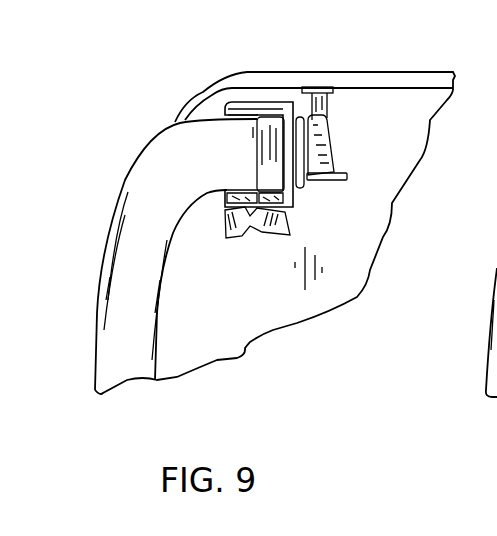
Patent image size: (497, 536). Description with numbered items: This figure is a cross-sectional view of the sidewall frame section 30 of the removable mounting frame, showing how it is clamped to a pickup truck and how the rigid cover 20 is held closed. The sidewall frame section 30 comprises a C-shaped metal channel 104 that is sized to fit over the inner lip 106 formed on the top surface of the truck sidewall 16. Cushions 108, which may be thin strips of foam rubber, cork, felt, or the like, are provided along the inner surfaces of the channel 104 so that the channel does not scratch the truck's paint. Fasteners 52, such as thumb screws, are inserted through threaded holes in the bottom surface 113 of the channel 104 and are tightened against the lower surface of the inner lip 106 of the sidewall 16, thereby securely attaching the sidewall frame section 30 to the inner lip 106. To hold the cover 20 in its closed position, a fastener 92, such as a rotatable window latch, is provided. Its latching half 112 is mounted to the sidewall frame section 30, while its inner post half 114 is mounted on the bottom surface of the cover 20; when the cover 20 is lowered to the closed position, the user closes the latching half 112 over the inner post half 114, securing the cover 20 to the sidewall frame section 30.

The sidewall 16 is at (145, 193).
The cover 20 is at (212, 92).
The sidewall frame section 30 is at (240, 102).
The fasteners 52 is at (233, 242).
The fastener 92 is at (330, 142).
The C-shaped metal channel 104 is at (297, 208).
The inner lip 106 is at (195, 142).
The cushions 108 is at (268, 207).
The latching half 112 is at (322, 180).
The bottom surface 113 is at (275, 212).
The inner post half 114 is at (332, 106).